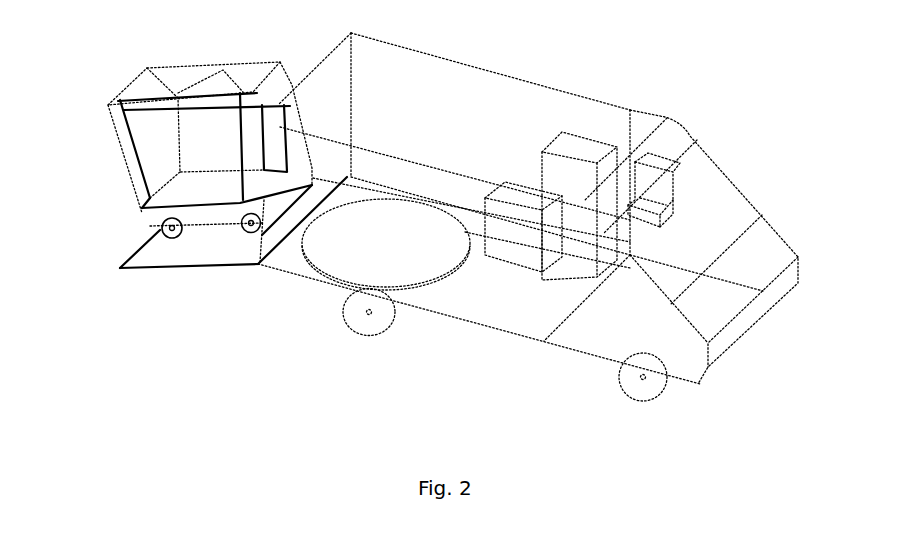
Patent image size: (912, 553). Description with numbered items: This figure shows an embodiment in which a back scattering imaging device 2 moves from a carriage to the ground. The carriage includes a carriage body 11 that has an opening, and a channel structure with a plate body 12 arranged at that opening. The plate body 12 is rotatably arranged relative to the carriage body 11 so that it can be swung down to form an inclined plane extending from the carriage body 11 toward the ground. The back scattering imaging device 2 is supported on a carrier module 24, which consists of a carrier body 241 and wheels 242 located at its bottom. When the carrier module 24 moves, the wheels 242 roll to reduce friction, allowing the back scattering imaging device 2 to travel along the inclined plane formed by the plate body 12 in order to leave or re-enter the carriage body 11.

The back scattering imaging device 2 is at (168, 78).
The carriage body 11 is at (445, 77).
The plate body 12 is at (147, 258).
The carrier module 24 is at (148, 221).
The carrier body 241 is at (198, 222).
The wheel 242 is at (253, 233).